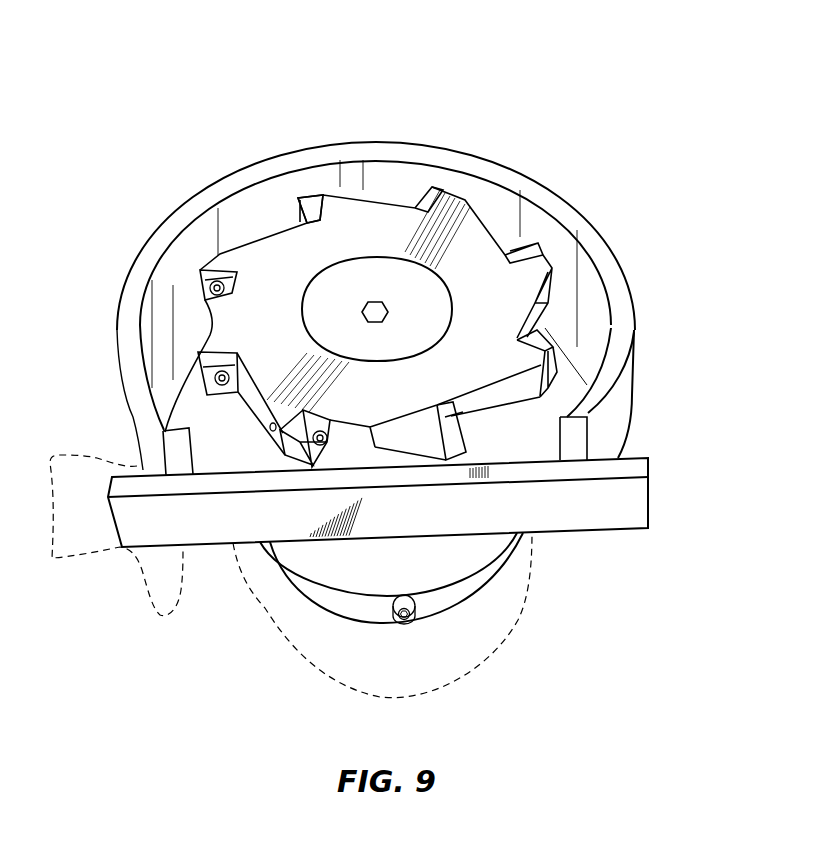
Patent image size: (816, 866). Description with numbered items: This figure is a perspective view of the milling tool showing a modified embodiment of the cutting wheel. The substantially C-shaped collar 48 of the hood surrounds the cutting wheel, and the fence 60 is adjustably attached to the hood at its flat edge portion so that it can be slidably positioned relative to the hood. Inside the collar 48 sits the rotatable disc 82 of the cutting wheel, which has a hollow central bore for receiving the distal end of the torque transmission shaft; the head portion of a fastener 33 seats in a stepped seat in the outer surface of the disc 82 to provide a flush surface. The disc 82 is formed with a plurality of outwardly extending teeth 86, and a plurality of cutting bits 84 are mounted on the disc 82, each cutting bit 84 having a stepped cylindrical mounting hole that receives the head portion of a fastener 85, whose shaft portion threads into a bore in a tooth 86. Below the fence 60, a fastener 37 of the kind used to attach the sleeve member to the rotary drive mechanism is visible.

The collar 48 is at (403, 142).
The rotatable disc 82 is at (376, 203).
The outwardly extending teeth 86 is at (318, 192).
The fastener 33 is at (330, 293).
The cutting bits 84 is at (200, 272).
The fastener 85 is at (207, 289).
The fence 60 is at (220, 549).
The fasteners 37 is at (395, 615).